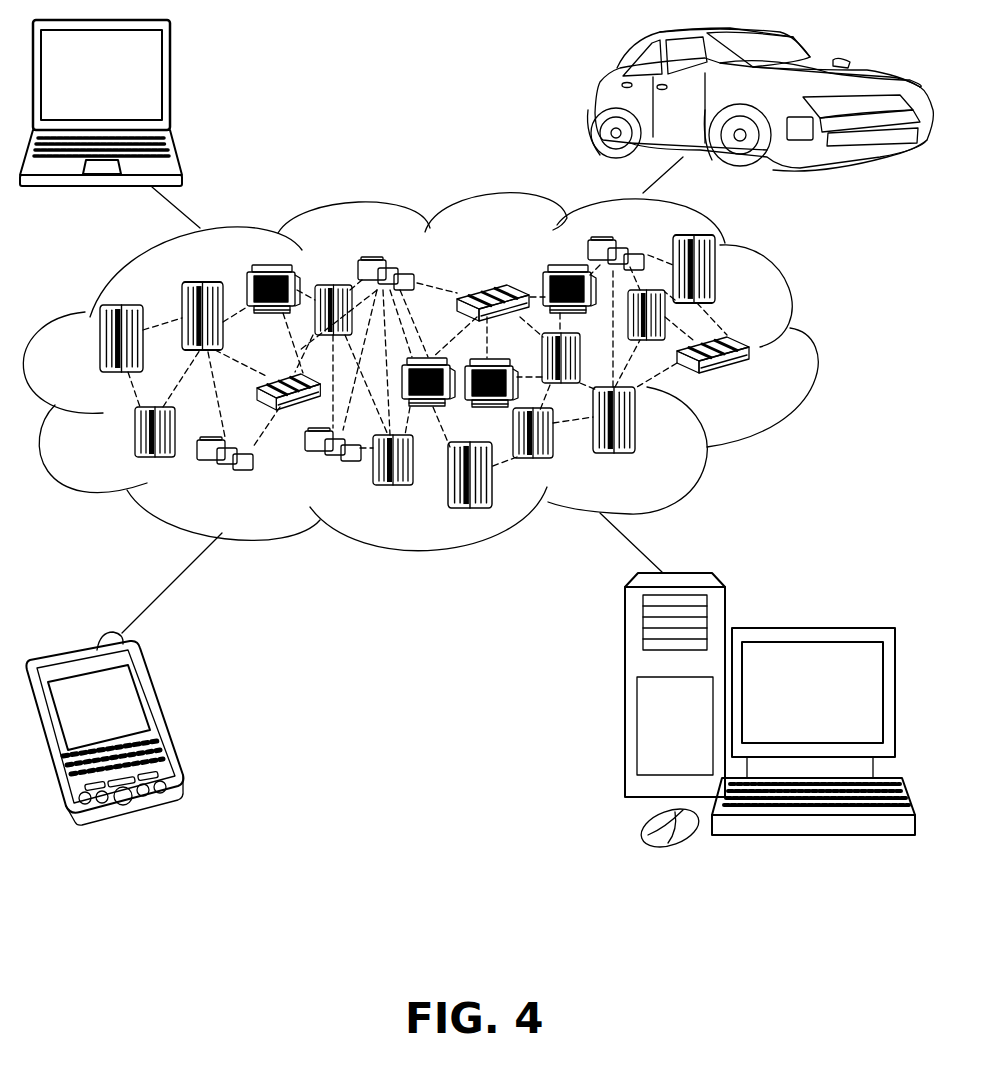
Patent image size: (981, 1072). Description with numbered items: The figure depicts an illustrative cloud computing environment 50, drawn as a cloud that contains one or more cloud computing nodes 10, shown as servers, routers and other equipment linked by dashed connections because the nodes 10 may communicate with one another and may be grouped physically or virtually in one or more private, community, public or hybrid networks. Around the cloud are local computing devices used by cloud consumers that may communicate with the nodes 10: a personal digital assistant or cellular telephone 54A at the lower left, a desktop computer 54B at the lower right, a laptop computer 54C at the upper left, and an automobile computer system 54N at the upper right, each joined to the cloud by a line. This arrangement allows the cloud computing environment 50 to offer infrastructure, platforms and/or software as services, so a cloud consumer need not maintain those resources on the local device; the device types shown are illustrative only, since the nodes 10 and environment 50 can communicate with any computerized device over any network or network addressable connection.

The cloud computing node 10 is at (752, 378).
The cloud computing environment 50 is at (445, 372).
The personal digital assistant or cellular telephone 54A is at (162, 720).
The desktop computer 54B is at (808, 628).
The laptop computer 54C is at (170, 86).
The automobile computer system 54N is at (595, 101).